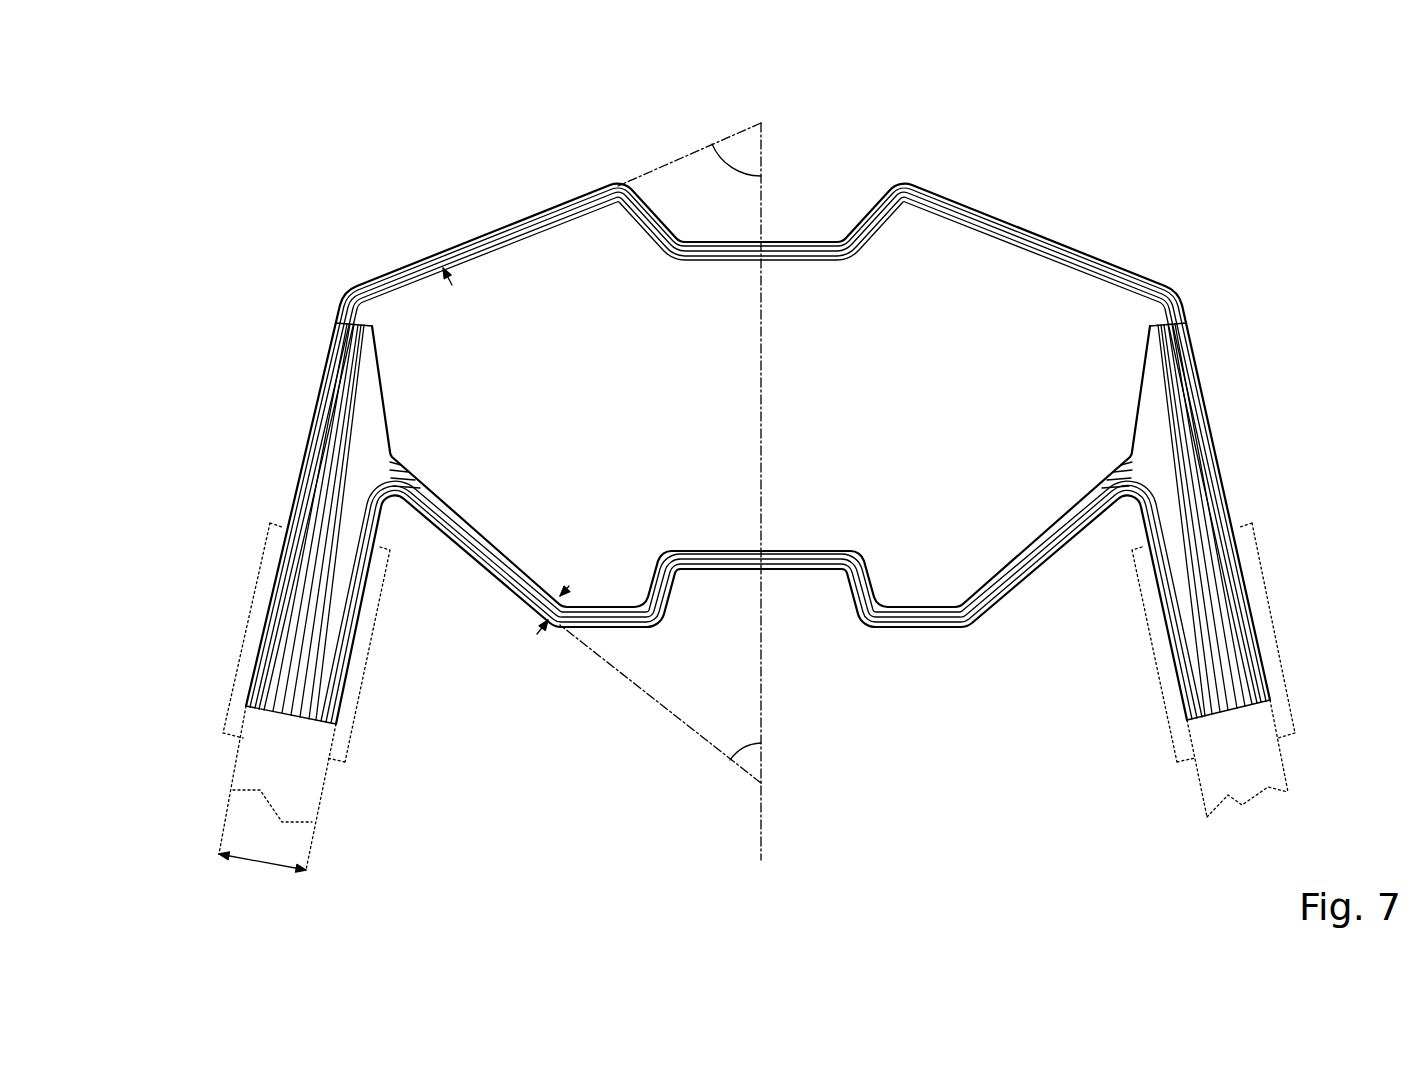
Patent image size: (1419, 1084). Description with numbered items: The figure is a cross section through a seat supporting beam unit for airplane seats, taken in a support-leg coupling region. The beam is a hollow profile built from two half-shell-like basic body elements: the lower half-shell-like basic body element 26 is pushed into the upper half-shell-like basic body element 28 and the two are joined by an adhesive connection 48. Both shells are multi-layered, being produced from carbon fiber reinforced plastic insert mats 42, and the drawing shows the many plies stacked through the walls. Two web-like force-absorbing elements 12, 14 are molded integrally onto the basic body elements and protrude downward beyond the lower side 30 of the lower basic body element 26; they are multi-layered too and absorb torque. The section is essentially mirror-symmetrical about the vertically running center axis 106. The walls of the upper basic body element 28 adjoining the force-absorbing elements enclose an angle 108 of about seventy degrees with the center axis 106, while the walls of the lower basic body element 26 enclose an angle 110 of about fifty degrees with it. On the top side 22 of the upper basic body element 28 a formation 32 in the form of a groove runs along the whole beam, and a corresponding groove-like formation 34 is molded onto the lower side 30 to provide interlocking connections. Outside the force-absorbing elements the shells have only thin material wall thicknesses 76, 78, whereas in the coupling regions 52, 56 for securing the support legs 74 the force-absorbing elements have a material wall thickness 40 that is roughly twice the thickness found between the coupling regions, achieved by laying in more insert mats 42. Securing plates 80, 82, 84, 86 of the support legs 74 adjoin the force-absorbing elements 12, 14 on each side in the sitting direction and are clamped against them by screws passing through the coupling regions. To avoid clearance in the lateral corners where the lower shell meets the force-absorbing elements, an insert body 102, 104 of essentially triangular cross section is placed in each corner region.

The force-absorbing element 12 is at (289, 727).
The force-absorbing element 14 is at (1232, 724).
The top side 22 is at (615, 166).
The lower half-shell-like basic body element 26 is at (523, 597).
The upper half-shell-like basic body element 28 is at (516, 218).
The lower side 30 is at (476, 552).
The formation 32 is at (812, 242).
The formation 34 is at (783, 569).
The material wall thickness 40 is at (263, 862).
The carbon fiber reinforced plastic insert mat 42 is at (322, 387).
The adhesive connection 48 is at (318, 444).
The coupling region 52 is at (1232, 513).
The coupling region 56 is at (260, 663).
The support leg 74 is at (1258, 760).
The material wall thickness 76 is at (437, 247).
The material wall thickness 78 is at (548, 624).
The securing plate 80 is at (267, 587).
The securing plate 82 is at (357, 678).
The securing plate 84 is at (1158, 637).
The securing plate 86 is at (1270, 652).
The insert body 102 is at (377, 490).
The insert body 104 is at (1127, 515).
The center axis 106 is at (762, 158).
The angle 108 is at (737, 168).
The angle 110 is at (733, 765).